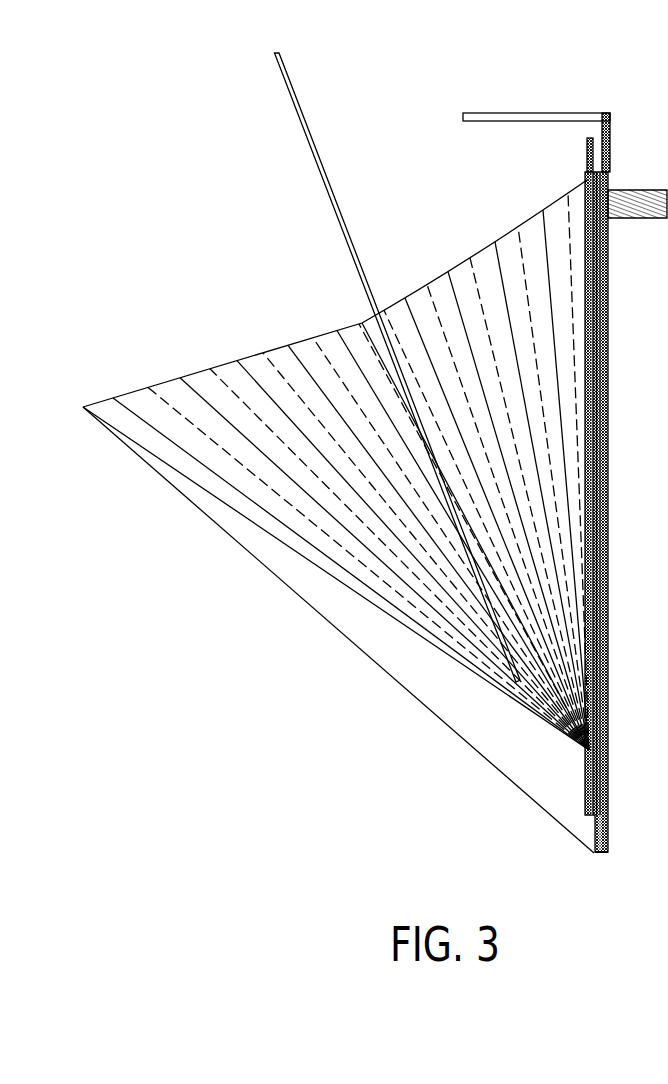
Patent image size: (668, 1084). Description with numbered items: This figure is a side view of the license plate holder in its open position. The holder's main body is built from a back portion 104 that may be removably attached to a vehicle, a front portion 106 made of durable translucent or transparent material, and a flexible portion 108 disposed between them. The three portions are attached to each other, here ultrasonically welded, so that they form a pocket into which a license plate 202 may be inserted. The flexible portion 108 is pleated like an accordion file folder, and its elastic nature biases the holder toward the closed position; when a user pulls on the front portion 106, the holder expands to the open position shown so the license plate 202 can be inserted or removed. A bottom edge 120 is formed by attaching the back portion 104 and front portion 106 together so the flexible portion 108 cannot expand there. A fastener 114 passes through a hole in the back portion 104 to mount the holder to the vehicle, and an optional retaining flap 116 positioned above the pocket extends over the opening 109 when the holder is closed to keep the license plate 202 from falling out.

The back portion 104 is at (608, 599).
The front portion 106 is at (340, 631).
The flexible portion 108 is at (548, 415).
The opening 109 is at (372, 513).
The fastener 114 is at (622, 220).
The retaining flap 116 is at (517, 113).
The bottom edge 120 is at (598, 853).
The license plate 202 is at (305, 119).